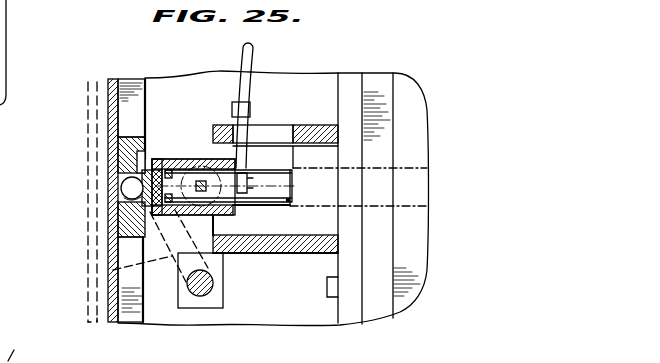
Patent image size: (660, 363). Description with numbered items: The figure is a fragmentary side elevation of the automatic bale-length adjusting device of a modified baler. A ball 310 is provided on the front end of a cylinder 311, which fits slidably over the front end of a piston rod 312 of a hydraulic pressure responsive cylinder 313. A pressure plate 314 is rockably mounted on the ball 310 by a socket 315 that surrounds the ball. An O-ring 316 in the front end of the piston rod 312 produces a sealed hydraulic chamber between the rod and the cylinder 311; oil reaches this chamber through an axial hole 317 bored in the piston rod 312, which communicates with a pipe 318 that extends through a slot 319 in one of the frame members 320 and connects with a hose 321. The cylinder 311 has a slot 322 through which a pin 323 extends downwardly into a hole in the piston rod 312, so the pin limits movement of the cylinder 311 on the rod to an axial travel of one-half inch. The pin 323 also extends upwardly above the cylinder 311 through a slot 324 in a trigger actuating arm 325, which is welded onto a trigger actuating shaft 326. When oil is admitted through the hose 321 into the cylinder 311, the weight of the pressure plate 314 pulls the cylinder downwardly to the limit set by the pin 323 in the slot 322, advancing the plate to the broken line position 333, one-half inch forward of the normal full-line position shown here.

The ball 310 is at (120, 194).
The cylinder 311 is at (152, 211).
The piston rod 312 is at (290, 213).
The hydraulic pressure responsive cylinder 313 is at (428, 226).
The pressure plate 314 is at (110, 108).
The socket 315 is at (120, 160).
The O-ring 316 is at (173, 166).
The axial hole 317 is at (244, 207).
The pipe 318 is at (245, 131).
The slot 319 is at (278, 128).
The frame members 320 is at (328, 113).
The hose 321 is at (254, 58).
The slot 322 is at (236, 165).
The pin 323 is at (154, 216).
The slot 324 is at (198, 166).
The trigger actuating arm 325 is at (113, 269).
The trigger actuating shaft 326 is at (200, 293).
The broken line position 333 is at (90, 128).